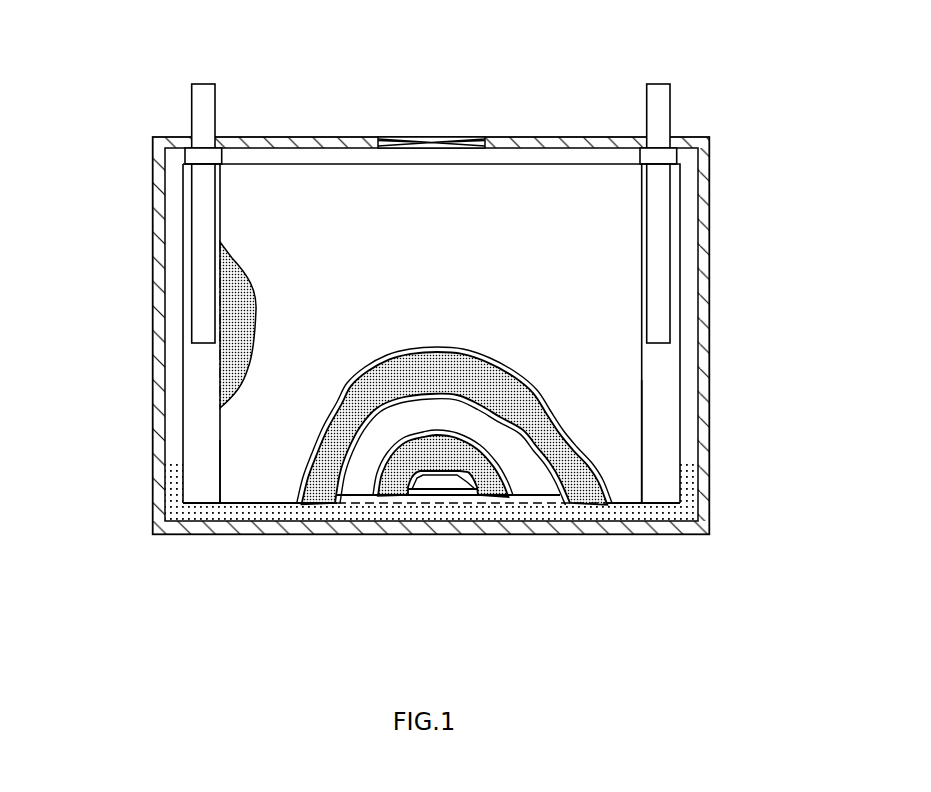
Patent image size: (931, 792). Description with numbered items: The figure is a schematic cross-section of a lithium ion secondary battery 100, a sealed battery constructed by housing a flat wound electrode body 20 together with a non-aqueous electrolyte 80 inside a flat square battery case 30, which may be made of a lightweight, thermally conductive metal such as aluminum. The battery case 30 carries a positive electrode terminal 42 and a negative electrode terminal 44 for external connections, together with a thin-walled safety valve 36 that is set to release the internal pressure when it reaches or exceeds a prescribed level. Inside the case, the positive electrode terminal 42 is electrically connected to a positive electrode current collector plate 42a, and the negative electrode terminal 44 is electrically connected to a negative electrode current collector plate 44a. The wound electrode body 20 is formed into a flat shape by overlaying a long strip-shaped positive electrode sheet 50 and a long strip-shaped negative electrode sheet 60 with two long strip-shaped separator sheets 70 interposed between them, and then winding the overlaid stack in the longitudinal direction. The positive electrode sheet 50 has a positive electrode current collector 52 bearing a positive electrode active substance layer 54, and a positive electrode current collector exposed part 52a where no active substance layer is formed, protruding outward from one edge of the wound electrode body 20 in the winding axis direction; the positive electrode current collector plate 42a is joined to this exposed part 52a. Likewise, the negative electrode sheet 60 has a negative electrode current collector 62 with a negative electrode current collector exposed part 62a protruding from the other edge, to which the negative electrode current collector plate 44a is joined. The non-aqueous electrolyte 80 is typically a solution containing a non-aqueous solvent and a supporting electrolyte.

The lithium ion secondary battery 100 is at (435, 332).
The wound electrode body 20 is at (430, 363).
The battery case 30 is at (712, 248).
The safety valve 36 is at (431, 137).
The positive electrode terminal 42 is at (138, 177).
The positive electrode current collector plate 42a is at (205, 232).
The negative electrode terminal 44 is at (727, 177).
The negative electrode current collector plate 44a is at (658, 198).
The positive electrode sheet 50 is at (318, 488).
The positive electrode current collector 52 is at (142, 340).
The positive electrode current collector exposed part 52a is at (198, 478).
The positive electrode active substance layer 54 is at (242, 300).
The negative electrode sheet 60 is at (395, 483).
The negative electrode current collector 62 is at (719, 333).
The negative electrode current collector exposed part 62a is at (665, 403).
The separator sheet 70 is at (258, 433).
The non-aqueous electrolyte 80 is at (620, 513).